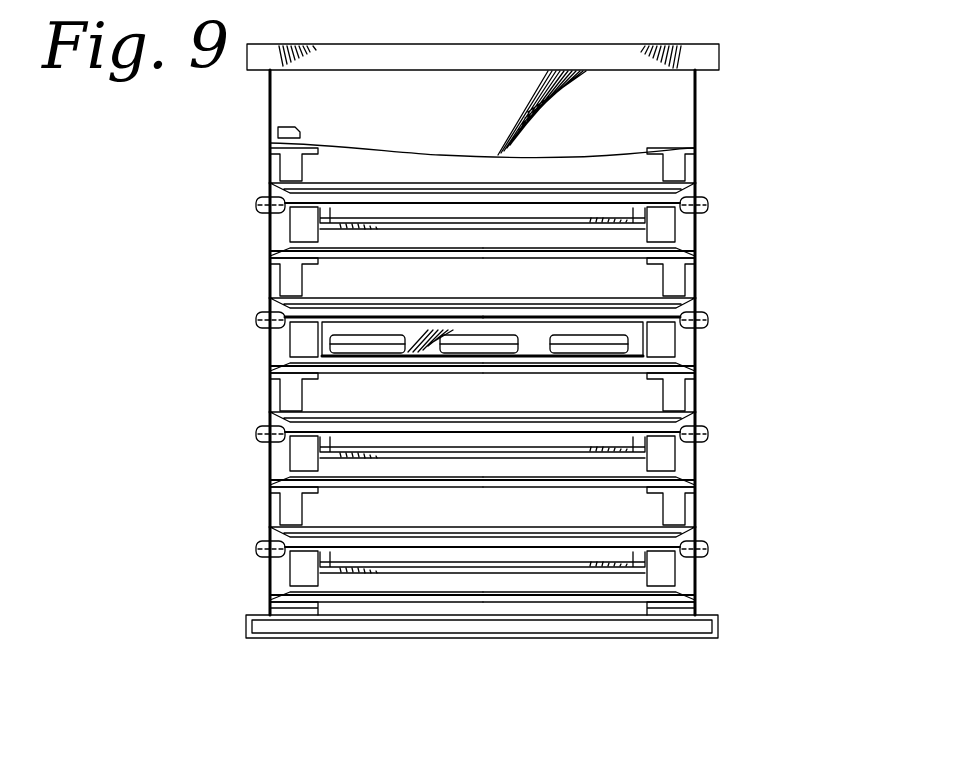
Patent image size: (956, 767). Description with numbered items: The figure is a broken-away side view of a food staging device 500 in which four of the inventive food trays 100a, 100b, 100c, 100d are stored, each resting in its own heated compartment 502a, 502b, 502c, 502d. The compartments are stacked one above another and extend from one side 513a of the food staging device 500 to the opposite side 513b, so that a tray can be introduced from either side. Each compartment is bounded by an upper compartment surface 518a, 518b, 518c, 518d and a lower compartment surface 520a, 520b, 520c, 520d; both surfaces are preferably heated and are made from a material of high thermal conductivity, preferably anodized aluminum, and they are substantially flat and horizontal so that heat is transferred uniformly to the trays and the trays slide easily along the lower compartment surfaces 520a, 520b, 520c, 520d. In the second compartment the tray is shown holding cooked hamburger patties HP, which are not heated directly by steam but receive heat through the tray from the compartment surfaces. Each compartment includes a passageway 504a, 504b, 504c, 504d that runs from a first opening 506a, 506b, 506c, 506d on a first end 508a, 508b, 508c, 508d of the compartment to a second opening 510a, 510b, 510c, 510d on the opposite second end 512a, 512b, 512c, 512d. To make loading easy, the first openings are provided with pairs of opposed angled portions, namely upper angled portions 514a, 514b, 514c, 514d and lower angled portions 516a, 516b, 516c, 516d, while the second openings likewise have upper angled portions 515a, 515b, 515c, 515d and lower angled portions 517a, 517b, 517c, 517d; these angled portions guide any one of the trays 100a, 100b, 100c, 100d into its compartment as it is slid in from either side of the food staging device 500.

The food staging device 500 is at (697, 125).
The one side of food staging device 513a is at (268, 105).
The opposite side of food staging device 513b is at (697, 100).
The food tray 100a is at (488, 215).
The food tray 100b is at (482, 322).
The food tray 100c is at (493, 447).
The food tray 100d is at (550, 563).
The hamburger patties HP is at (358, 340).
The upper compartment surface 518a is at (355, 193).
The upper compartment surface 518b is at (575, 312).
The upper compartment surface 518c is at (567, 425).
The upper compartment surface 518d is at (478, 545).
The upper angled portion 514a is at (262, 198).
The upper angled portion 514b is at (262, 318).
The upper angled portion 514c is at (262, 432).
The upper angled portion 514d is at (262, 547).
The upper angled portion 515a is at (697, 193).
The upper angled portion 515b is at (697, 308).
The upper angled portion 515c is at (697, 422).
The upper angled portion 515d is at (697, 535).
The passageway 504a is at (262, 215).
The passageway 504b is at (262, 338).
The passageway 504c is at (262, 462).
The passageway 504d is at (262, 583).
The second opening 510a is at (697, 238).
The second opening 510b is at (697, 355).
The second opening 510c is at (697, 470).
The second opening 510d is at (697, 585).
The first opening 506a is at (272, 224).
The first opening 506b is at (272, 345).
The first opening 506c is at (272, 470).
The first opening 506d is at (272, 577).
The heated compartment 502a is at (697, 227).
The heated compartment 502b is at (697, 345).
The heated compartment 502c is at (697, 462).
The heated compartment 502d is at (697, 578).
The lower compartment surface 520a is at (347, 245).
The lower compartment surface 520b is at (387, 360).
The lower compartment surface 520c is at (417, 478).
The lower compartment surface 520d is at (413, 592).
The first end 508a is at (278, 233).
The first end 508b is at (278, 350).
The first end 508c is at (278, 448).
The first end 508d is at (278, 565).
The second end 512a is at (697, 250).
The second end 512b is at (697, 340).
The second end 512c is at (697, 452).
The second end 512d is at (697, 568).
The lower angled portion 516a is at (272, 262).
The lower angled portion 516b is at (272, 365).
The lower angled portion 516c is at (272, 480).
The lower angled portion 516d is at (272, 598).
The lower angled portion 517a is at (697, 267).
The lower angled portion 517b is at (697, 382).
The lower angled portion 517c is at (697, 495).
The lower angled portion 517d is at (697, 610).